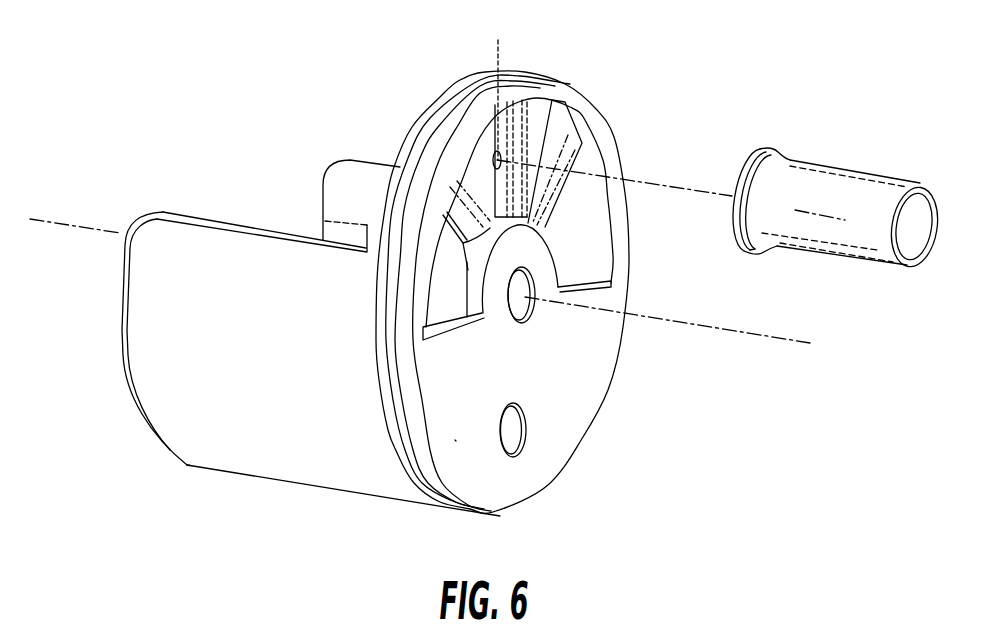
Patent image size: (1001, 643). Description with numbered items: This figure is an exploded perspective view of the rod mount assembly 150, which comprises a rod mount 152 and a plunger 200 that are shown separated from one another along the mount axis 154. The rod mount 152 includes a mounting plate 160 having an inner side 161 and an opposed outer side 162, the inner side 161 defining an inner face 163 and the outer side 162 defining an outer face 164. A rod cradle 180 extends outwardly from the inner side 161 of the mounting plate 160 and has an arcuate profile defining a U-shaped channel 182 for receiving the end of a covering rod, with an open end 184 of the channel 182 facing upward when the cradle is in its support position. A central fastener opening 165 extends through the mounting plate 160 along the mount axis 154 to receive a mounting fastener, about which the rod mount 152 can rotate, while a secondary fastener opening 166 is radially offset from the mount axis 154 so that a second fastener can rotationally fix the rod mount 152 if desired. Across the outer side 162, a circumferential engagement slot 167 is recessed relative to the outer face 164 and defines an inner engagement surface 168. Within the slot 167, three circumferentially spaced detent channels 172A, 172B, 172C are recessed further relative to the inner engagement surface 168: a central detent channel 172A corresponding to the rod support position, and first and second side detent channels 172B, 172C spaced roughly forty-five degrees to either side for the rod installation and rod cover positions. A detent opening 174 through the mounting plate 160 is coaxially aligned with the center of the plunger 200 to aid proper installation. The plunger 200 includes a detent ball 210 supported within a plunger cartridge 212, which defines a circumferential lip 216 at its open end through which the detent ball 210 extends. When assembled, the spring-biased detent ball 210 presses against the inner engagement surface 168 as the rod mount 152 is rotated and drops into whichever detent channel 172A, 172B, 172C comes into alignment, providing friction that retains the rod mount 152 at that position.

The rod mount assembly 150 is at (133, 52).
The rod mount 152 is at (260, 92).
The mount axis 154 is at (740, 337).
The mounting plate 160 is at (478, 68).
The inner side 161 is at (415, 117).
The outer side 162 is at (582, 385).
The inner face 163 is at (377, 200).
The outer face 164 is at (455, 440).
The central fastener opening 165 is at (513, 300).
The secondary fastener opening 166 is at (513, 437).
The circumferential engagement slot 167 is at (575, 240).
The inner engagement surface 168 is at (442, 300).
The central detent channel 172A is at (513, 133).
The first side detent channel 172B is at (575, 140).
The second side detent channel 172C is at (450, 212).
The detent opening 174 is at (608, 102).
The rod cradle 180 is at (204, 422).
The channel 182 is at (227, 211).
The open end 184 is at (167, 210).
The plunger 200 is at (850, 127).
The detent ball 210 is at (735, 180).
The plunger cartridge 212 is at (853, 192).
The circumferential lip 216 is at (757, 251).